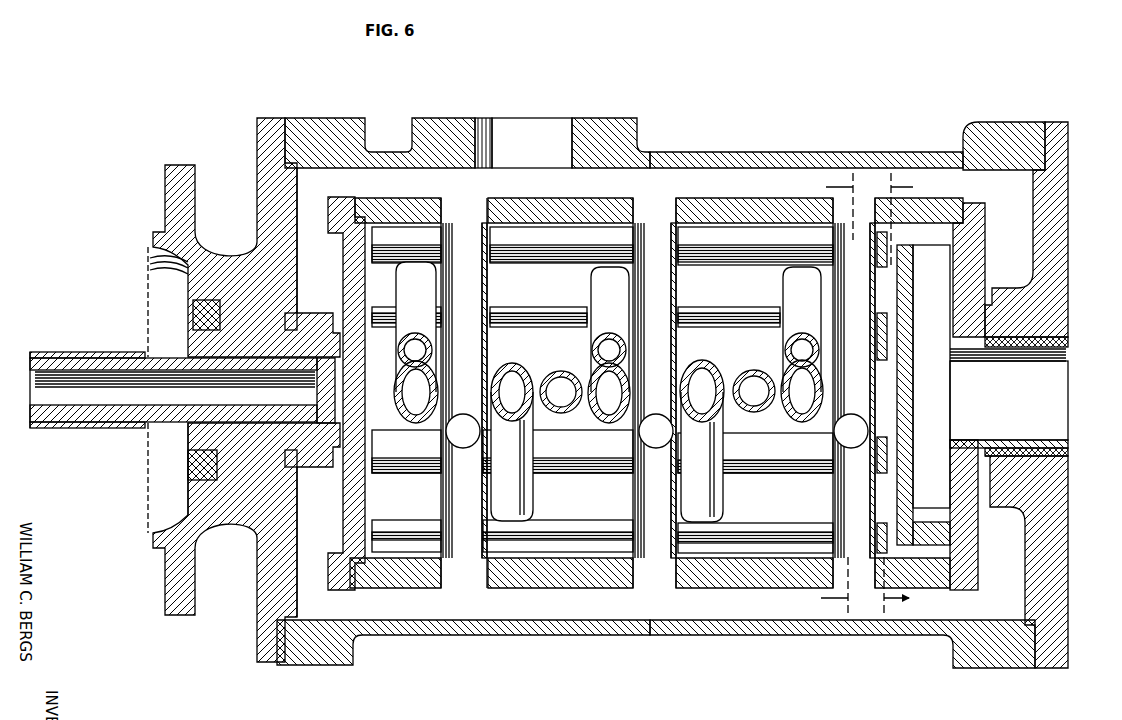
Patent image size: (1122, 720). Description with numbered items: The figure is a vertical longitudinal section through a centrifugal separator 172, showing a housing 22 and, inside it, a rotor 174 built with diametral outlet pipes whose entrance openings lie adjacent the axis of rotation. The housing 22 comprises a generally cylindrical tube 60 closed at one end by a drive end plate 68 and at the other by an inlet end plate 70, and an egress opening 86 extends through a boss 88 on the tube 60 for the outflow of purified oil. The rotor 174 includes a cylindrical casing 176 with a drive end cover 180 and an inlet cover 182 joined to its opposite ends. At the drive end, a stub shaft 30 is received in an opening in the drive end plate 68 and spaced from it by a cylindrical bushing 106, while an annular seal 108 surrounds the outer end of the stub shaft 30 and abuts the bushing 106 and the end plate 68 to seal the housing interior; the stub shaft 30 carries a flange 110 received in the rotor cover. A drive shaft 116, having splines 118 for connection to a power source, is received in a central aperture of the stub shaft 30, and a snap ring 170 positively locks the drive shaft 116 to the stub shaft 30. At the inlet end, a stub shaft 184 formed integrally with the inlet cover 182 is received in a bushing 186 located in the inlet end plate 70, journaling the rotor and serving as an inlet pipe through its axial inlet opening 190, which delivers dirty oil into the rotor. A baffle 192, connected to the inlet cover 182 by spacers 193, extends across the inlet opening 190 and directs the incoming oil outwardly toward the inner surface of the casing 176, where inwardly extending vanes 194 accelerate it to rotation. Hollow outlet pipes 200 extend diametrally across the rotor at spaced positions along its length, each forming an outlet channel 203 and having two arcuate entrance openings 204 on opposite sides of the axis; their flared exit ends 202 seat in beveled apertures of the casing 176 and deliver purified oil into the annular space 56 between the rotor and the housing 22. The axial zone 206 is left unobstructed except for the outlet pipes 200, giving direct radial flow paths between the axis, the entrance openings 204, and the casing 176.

The housing 22 is at (563, 374).
The stub shaft 30 is at (196, 432).
The annular space 56 is at (637, 166).
The housing tube 60 is at (703, 162).
The drive end plate 68 is at (262, 182).
The inlet end plate 70 is at (1066, 290).
The egress opening 86 is at (530, 130).
The boss 88 is at (600, 130).
The cylindrical bushing 106 is at (328, 318).
The annular seal 108 is at (196, 324).
The flange 110 is at (330, 286).
The drive shaft 116 is at (110, 357).
The splines 118 is at (45, 352).
The snap ring 170 is at (252, 385).
The separator 172 is at (1050, 110).
The rotor 174 is at (514, 598).
The cylindrical casing 176 is at (715, 207).
The drive end cover 180 is at (340, 205).
The inlet cover 182 is at (975, 246).
The stub shaft 184 is at (1040, 350).
The bushing 186 is at (1066, 341).
The axial inlet opening 190 is at (1042, 421).
The baffle 192 is at (905, 420).
The spacers 193 is at (933, 272).
The vanes 194 is at (723, 328).
The outlet pipes 200 is at (490, 314).
The exit ends 202 is at (486, 204).
The outlet channel 203 is at (476, 283).
The entrance openings 204 is at (425, 338).
The axial zone 206 is at (760, 358).